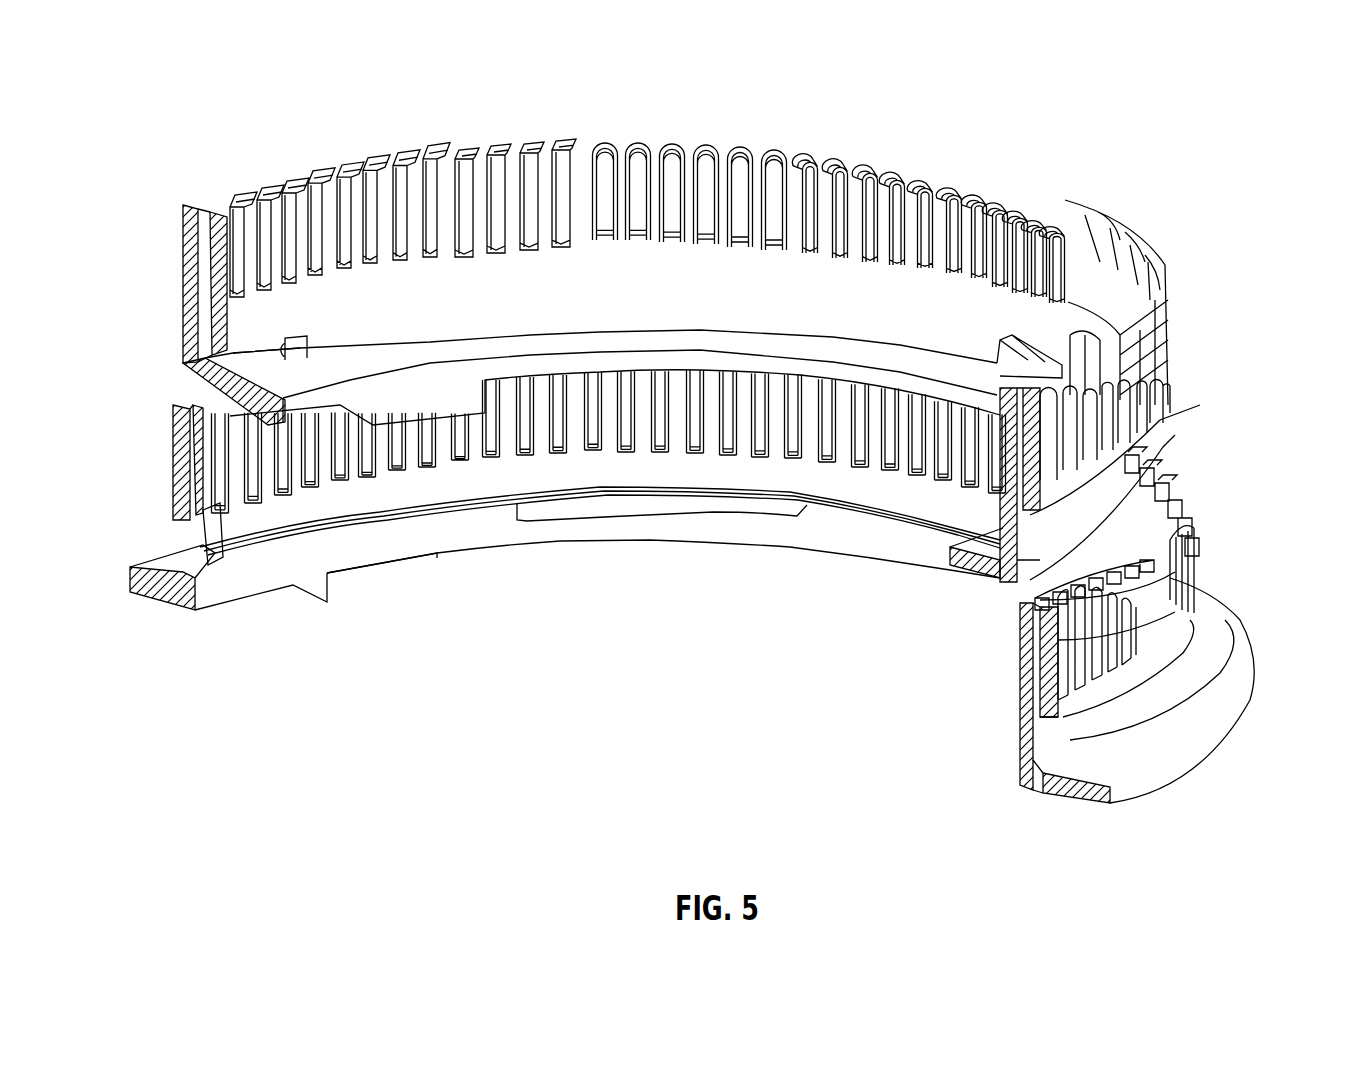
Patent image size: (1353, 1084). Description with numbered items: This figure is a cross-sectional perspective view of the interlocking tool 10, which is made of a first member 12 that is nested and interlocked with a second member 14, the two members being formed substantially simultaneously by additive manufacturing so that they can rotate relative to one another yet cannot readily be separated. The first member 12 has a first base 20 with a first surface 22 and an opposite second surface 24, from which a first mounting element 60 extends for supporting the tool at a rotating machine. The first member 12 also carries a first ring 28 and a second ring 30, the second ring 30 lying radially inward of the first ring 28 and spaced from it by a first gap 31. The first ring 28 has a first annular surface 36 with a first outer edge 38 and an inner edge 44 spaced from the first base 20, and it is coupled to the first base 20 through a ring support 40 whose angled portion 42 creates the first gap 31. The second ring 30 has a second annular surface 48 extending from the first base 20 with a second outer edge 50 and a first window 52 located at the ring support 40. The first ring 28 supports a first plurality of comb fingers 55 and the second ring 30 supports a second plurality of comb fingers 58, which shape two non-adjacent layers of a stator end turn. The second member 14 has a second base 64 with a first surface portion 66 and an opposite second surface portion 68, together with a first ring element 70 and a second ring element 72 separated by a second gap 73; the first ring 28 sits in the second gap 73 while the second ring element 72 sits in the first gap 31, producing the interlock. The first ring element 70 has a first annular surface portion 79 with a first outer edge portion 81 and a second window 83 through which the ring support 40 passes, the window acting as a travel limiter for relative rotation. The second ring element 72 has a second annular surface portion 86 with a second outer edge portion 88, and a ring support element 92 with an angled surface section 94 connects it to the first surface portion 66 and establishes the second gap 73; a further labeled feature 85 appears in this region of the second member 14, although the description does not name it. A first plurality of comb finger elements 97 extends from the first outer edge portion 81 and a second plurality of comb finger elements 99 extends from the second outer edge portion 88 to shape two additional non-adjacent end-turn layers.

The interlocking tool 10 is at (357, 590).
The first member 12 is at (176, 255).
The second member 14 is at (147, 508).
The first base 20 is at (706, 358).
The first surface 22 is at (586, 337).
The second surface 24 is at (580, 503).
The first ring 28 is at (176, 300).
The second ring 30 is at (1042, 533).
The first gap 31 is at (1108, 232).
The first annular surface 36 is at (1132, 480).
The first outer edge 38 is at (1195, 527).
The ring support 40 is at (185, 382).
The angled portion 42 is at (222, 368).
The inner edge 44 is at (1195, 580).
The second annular surface 48 is at (458, 290).
The second outer edge 50 is at (620, 235).
The first window 52 is at (308, 348).
The first plurality of comb fingers 55 is at (937, 186).
The second plurality of comb fingers 58 is at (878, 188).
The first mounting element 60 is at (453, 412).
The second base 64 is at (220, 595).
The first surface portion 66 is at (155, 570).
The second surface portion 68 is at (165, 603).
The first ring element 70 is at (153, 477).
The second ring element 72 is at (1020, 688).
The second gap 73 is at (218, 523).
The first annular surface portion 79 is at (1168, 735).
The first outer edge portion 81 is at (1165, 697).
The second window 83 is at (1120, 700).
The bottom slab 85 is at (1080, 790).
The second annular surface portion 86 is at (392, 495).
The second outer edge portion 88 is at (665, 455).
The ring support element 92 is at (657, 525).
The angled surface section 94 is at (593, 462).
The first plurality of comb finger elements 97 is at (1163, 480).
The second plurality of comb finger elements 99 is at (1027, 637).